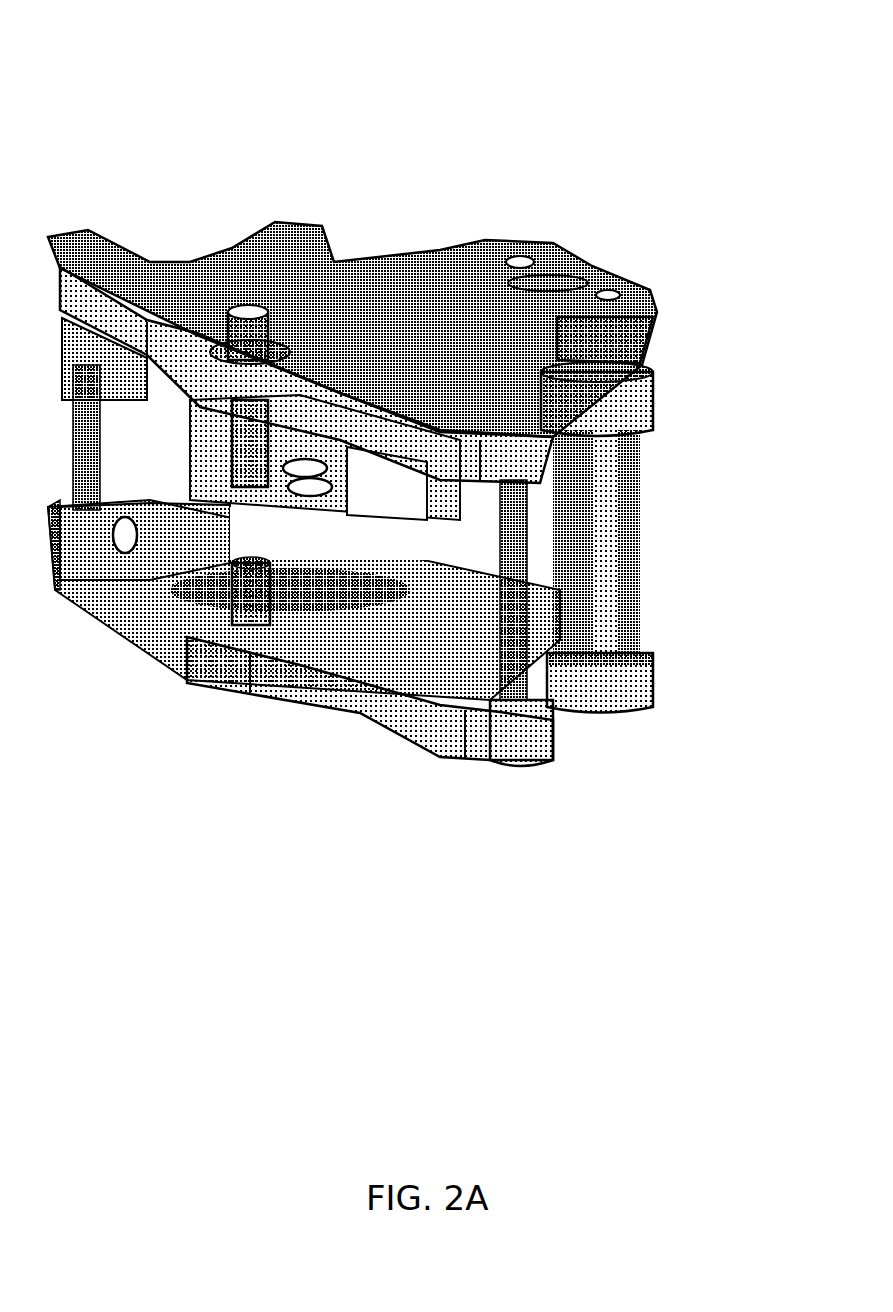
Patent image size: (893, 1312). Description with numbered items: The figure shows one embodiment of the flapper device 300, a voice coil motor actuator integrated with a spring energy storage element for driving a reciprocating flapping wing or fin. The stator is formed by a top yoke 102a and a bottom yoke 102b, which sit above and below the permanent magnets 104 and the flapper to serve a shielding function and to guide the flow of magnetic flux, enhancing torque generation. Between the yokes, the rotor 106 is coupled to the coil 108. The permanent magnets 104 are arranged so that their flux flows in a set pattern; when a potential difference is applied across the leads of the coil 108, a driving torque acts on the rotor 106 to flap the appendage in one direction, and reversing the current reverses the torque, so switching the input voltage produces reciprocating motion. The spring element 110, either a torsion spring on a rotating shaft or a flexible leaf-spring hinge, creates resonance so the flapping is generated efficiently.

The gimbal assembly 300 is at (411, 430).
The top stator yoke 102a is at (488, 236).
The bottom stator yoke 102b is at (418, 752).
The permanent magnets 104 is at (448, 688).
The rotor 106 is at (325, 541).
The coil 108 is at (588, 465).
The spring element 110 is at (278, 618).